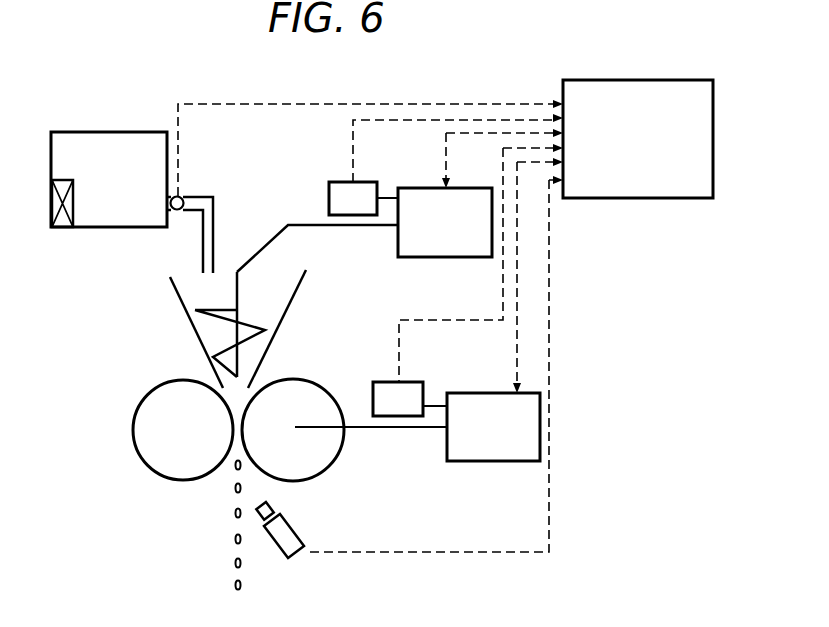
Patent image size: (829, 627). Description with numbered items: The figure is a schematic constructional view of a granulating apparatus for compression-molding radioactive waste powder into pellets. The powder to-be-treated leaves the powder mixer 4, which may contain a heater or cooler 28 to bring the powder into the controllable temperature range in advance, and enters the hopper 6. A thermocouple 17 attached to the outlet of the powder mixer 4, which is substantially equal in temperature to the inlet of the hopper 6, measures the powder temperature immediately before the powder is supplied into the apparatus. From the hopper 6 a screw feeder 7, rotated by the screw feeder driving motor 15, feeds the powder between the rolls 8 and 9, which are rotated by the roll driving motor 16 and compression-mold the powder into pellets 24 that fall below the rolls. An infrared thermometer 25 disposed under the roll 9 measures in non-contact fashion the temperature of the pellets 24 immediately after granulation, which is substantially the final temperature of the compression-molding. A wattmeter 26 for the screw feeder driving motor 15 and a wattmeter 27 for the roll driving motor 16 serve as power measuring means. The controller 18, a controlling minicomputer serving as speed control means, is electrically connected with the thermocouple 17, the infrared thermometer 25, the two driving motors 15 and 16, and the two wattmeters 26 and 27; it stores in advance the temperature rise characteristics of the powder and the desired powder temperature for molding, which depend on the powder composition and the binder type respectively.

The powder mixer 4 is at (115, 140).
The heater or cooler 28 is at (62, 224).
The thermocouple 17 is at (182, 198).
The hopper 6 is at (172, 289).
The screw feeder 7 is at (228, 350).
The roll 8 is at (148, 400).
The roll 9 is at (334, 451).
The pellets 24 is at (234, 538).
The infrared thermometer 25 is at (282, 548).
The wattmeter 26 is at (329, 196).
The motor 15 is at (448, 257).
The wattmeter 27 is at (383, 387).
The motor 16 is at (533, 433).
The controller 18 is at (634, 84).